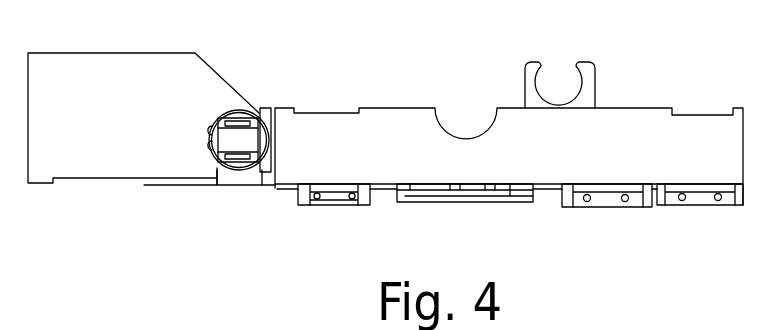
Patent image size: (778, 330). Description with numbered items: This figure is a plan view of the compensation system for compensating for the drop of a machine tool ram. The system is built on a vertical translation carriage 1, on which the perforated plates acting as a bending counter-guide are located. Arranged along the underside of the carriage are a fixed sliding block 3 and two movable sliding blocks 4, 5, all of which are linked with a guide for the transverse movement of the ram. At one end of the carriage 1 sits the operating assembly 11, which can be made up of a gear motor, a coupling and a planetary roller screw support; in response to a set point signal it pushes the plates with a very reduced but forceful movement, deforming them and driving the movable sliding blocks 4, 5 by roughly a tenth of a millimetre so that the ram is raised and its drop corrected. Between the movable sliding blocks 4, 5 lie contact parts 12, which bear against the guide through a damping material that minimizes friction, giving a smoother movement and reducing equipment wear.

The vertical translation carriage 1 is at (406, 137).
The operating assembly 11 is at (233, 172).
The movable sliding block 5 is at (325, 198).
The contact part 12 is at (487, 192).
The movable sliding block 4 is at (610, 205).
The fixed sliding block 3 is at (702, 205).